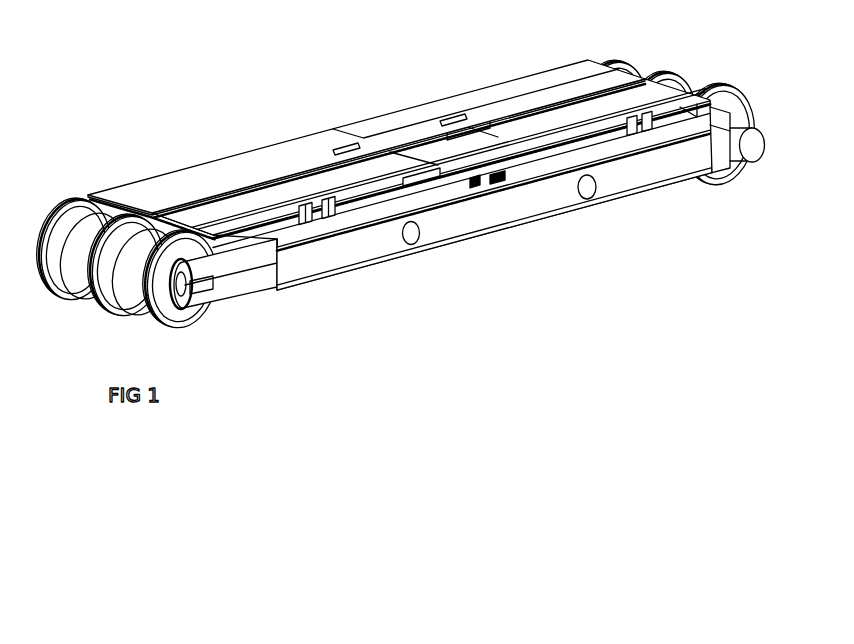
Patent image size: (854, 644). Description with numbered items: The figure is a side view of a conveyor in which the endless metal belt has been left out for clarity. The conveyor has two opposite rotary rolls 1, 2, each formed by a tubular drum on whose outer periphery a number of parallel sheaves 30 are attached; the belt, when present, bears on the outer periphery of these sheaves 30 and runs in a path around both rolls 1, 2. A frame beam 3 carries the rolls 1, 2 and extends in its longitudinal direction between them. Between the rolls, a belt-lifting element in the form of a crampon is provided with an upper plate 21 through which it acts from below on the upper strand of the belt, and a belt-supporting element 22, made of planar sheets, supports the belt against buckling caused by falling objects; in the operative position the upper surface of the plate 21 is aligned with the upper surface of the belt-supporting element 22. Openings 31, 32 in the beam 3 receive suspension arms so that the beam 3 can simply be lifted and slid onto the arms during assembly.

The rotary roll 1 is at (104, 290).
The rotary roll 2 is at (700, 80).
The beam 3 is at (515, 212).
The upper plate 21 is at (387, 123).
The belt-supporting element 22 is at (257, 165).
The sheave 30 is at (87, 212).
The opening 31 is at (412, 237).
The opening 32 is at (588, 192).